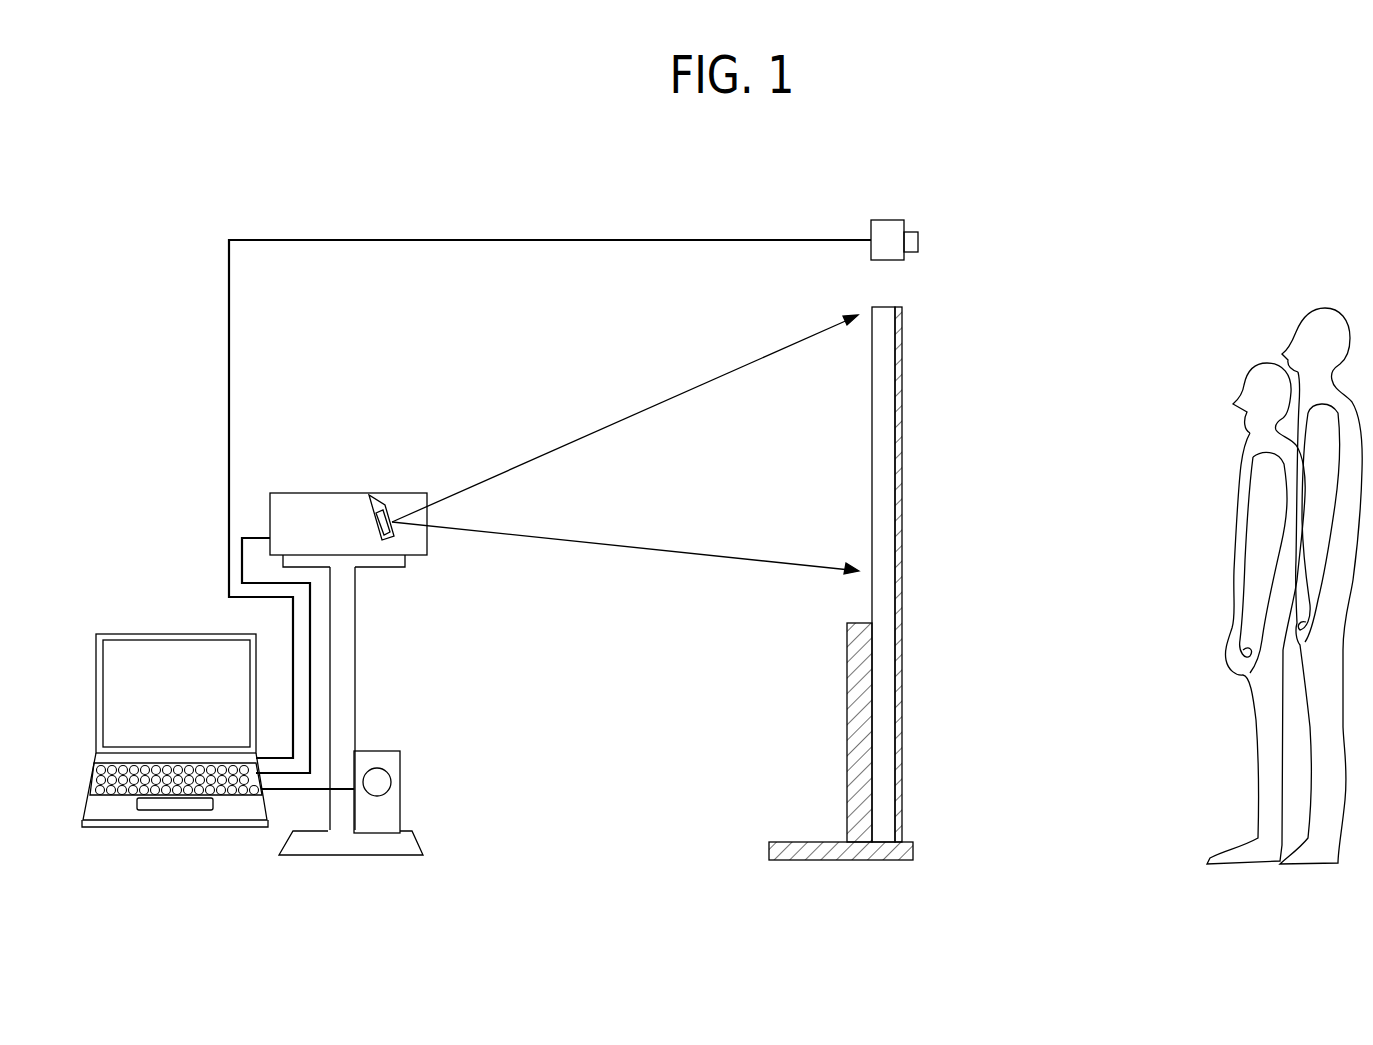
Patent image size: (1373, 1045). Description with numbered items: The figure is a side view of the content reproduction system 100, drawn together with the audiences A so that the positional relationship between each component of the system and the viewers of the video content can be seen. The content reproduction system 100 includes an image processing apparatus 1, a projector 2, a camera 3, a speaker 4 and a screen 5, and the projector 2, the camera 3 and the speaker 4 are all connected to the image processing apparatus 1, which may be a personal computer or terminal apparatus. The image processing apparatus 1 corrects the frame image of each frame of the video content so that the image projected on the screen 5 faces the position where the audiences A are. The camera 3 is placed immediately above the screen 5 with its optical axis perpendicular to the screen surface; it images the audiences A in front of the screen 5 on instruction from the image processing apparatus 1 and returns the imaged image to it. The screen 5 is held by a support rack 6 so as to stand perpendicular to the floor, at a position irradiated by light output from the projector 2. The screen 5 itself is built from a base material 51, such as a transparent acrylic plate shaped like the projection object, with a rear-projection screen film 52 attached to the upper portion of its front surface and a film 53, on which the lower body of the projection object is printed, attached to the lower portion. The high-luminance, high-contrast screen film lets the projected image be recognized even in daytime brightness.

The content reproduction system 100 is at (1035, 212).
The image processing apparatus 1 is at (134, 634).
The projector 2 is at (300, 493).
The camera 3 is at (887, 220).
The speaker 4 is at (385, 751).
The screen 5 is at (871, 301).
The base material 51 is at (872, 400).
The rear-projection screen film 52 is at (902, 362).
The film 53 is at (900, 723).
The support rack 6 is at (802, 861).
The audiences A is at (1260, 342).